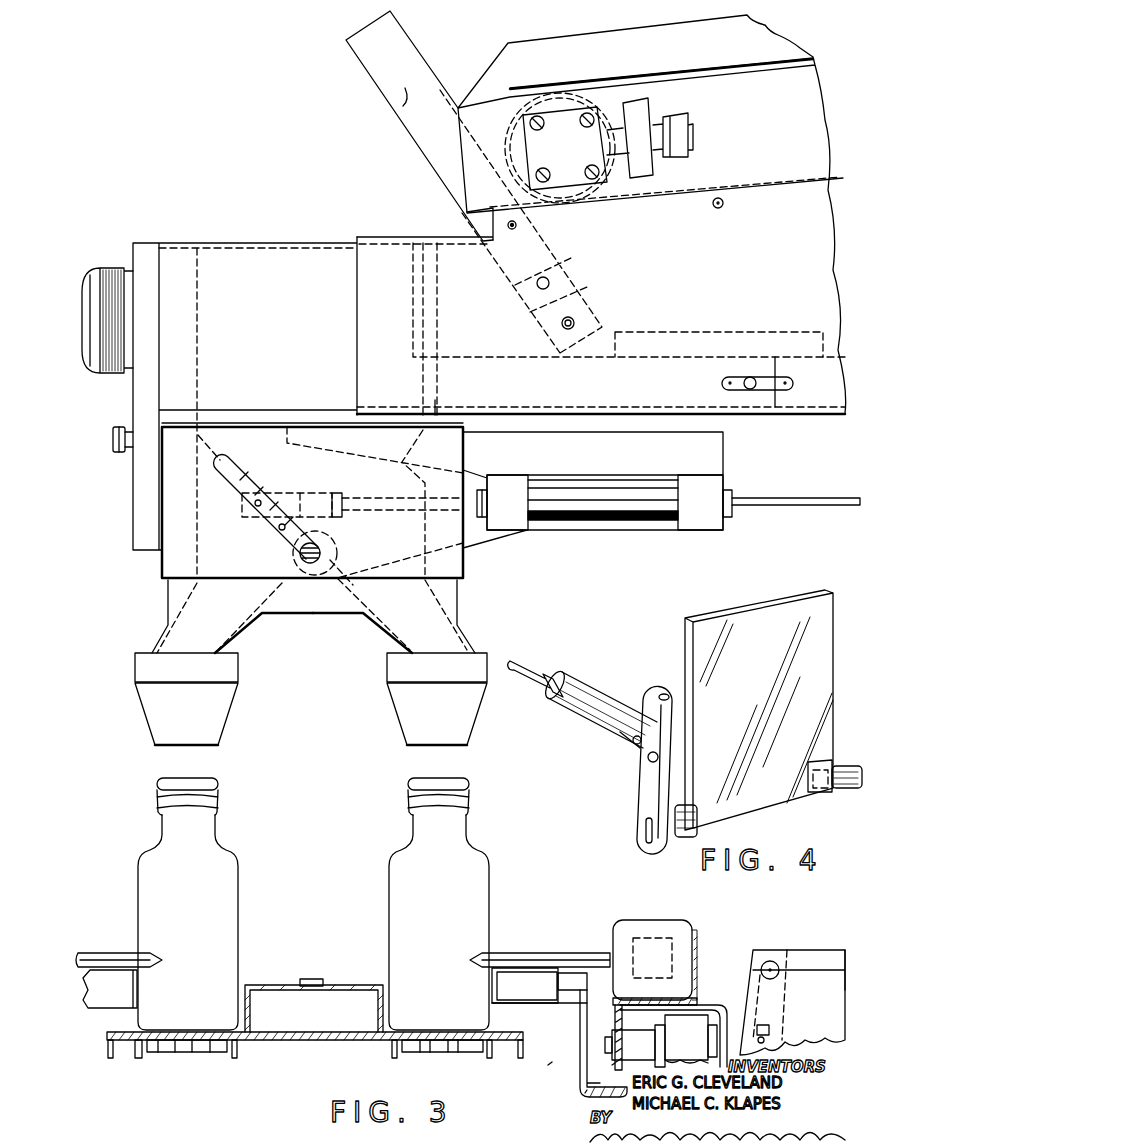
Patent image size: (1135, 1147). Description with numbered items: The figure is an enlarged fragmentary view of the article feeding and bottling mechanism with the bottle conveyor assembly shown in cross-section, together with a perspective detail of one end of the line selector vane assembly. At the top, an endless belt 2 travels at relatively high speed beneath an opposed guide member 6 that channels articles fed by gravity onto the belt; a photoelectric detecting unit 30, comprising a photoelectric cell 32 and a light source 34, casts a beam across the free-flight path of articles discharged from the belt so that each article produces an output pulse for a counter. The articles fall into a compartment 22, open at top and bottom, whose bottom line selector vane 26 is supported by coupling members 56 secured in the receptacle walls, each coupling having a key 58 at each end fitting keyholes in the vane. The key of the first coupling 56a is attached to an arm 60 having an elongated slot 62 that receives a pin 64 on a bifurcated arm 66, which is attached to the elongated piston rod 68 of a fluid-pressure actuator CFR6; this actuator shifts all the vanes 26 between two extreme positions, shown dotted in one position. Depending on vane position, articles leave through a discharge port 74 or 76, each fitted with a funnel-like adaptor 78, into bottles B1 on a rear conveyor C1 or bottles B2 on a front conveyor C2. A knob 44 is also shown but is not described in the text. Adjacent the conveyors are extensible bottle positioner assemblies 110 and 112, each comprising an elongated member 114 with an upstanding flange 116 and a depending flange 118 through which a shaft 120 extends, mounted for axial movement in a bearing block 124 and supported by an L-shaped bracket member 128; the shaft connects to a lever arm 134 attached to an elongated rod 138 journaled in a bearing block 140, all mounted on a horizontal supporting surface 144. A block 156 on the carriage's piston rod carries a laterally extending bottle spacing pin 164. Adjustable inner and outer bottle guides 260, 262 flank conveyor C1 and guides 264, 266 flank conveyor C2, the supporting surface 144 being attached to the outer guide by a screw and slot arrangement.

In FIG. 3, the endless belt 2 is at (598, 88).
In FIG. 3, the guide member 6 is at (482, 75).
In FIG. 3, the compartment 22 is at (206, 237).
In FIG. 3, the line selector vane 26 is at (220, 483).
In FIG. 4, the line selector vane 26 is at (703, 640).
In FIG. 3, the photoelectric detecting unit 30 is at (396, 134).
In FIG. 3, the photoelectric cell 32 is at (485, 227).
In FIG. 3, the light source 34 is at (390, 83).
In FIG. 3, the knob 44 is at (101, 274).
In FIG. 4, the coupling member 56 is at (808, 765).
In FIG. 3, the first coupling 56a is at (318, 532).
In FIG. 4, the first coupling 56a is at (687, 833).
In FIG. 4, the key 58 is at (648, 837).
In FIG. 3, the arm 60 is at (290, 549).
In FIG. 4, the arm 60 is at (647, 800).
In FIG. 4, the elongated slot 62 is at (648, 758).
In FIG. 4, the pin 64 is at (623, 737).
In FIG. 3, the bifurcated arm 66 is at (310, 491).
In FIG. 4, the bifurcated arm 66 is at (595, 687).
In FIG. 3, the piston rod 68 is at (372, 497).
In FIG. 4, the piston rod 68 is at (532, 668).
In FIG. 3, the discharge port 74 is at (383, 638).
In FIG. 3, the discharge port 76 is at (238, 638).
In FIG. 3, the adaptor 78 is at (220, 705).
In FIG. 3, the bottle positioner assembly 110 is at (591, 933).
In FIG. 3, the bottle positioner assembly 112 is at (91, 940).
In FIG. 3, the elongated member 114 is at (670, 997).
In FIG. 3, the upstanding flange 116 is at (697, 968).
In FIG. 3, the depending flange 118 is at (580, 1027).
In FIG. 3, the shaft 120 is at (612, 1065).
In FIG. 3, the bearing block 124 is at (673, 1025).
In FIG. 3, the L-shaped bracket member 128 is at (723, 1008).
In FIG. 3, the lever arm 134 is at (757, 950).
In FIG. 3, the elongated rod 138 is at (793, 952).
In FIG. 3, the bearing block 140 is at (840, 980).
In FIG. 3, the horizontal supporting surface 144 is at (585, 1093).
In FIG. 3, the block 156 is at (625, 927).
In FIG. 3, the bottle spacing pin 164 is at (143, 960).
In FIG. 3, the inner bottle guide 260 is at (340, 983).
In FIG. 3, the outer bottle guide 262 is at (548, 1065).
In FIG. 3, the inner bottle guide 264 is at (290, 971).
In FIG. 3, the outer bottle guide 266 is at (102, 1008).
In FIG. 3, the bottle B1 is at (400, 902).
In FIG. 3, the bottle B2 is at (222, 905).
In FIG. 3, the rear conveyor C1 is at (428, 1033).
In FIG. 3, the front conveyor C2 is at (180, 1035).
In FIG. 3, the fluid-pressure actuator CFR6 is at (603, 523).